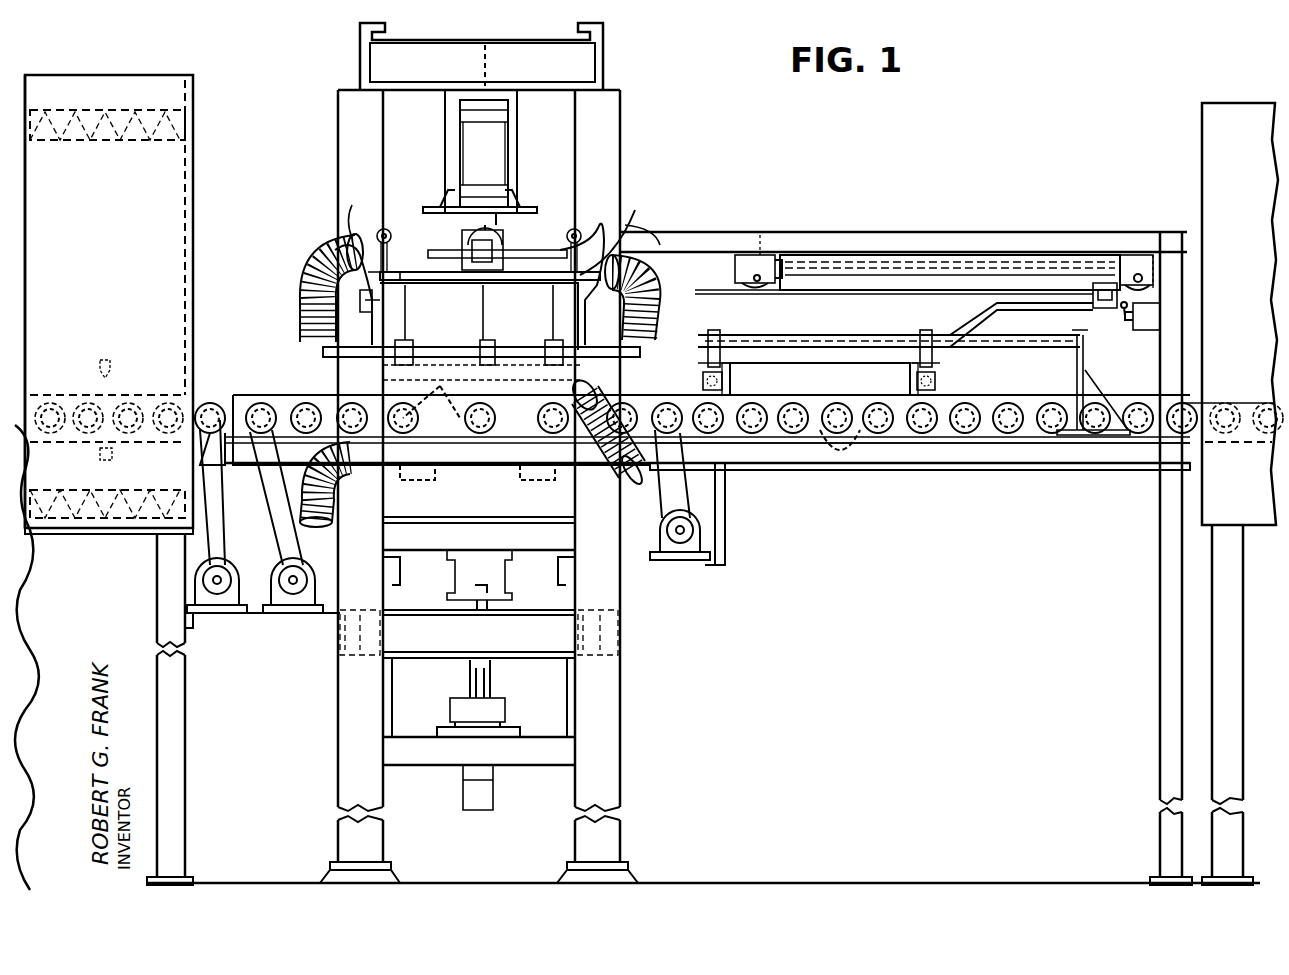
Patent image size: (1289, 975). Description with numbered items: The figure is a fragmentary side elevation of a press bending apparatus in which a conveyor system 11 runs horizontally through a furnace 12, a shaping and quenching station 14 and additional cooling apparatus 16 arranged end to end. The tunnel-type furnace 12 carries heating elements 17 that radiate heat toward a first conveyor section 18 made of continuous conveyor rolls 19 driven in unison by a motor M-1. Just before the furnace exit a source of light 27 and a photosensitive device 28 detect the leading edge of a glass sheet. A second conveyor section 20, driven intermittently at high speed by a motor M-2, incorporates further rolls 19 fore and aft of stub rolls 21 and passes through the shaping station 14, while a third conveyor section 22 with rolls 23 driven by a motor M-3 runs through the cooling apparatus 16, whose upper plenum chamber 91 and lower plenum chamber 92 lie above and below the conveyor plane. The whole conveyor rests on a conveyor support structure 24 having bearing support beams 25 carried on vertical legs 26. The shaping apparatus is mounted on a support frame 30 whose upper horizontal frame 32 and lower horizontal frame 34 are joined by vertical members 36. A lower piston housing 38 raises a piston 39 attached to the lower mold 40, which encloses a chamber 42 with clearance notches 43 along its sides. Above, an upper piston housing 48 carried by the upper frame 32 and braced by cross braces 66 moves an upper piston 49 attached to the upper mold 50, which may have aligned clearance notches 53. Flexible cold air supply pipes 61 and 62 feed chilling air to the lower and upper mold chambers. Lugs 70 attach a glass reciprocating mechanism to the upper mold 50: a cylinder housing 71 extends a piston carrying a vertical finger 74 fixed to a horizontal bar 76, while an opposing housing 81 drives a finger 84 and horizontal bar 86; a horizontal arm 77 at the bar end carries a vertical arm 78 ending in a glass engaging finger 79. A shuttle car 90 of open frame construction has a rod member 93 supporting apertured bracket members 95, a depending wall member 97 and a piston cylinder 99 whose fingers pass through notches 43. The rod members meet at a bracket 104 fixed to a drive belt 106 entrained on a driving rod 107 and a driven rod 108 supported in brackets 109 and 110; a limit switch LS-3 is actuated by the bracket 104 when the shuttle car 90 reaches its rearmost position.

The conveyor system 11 is at (62, 400).
The furnace 12 is at (45, 534).
The shaping and quenching station 14 is at (485, 486).
The additional cooling apparatus 16 is at (1232, 494).
The heating elements 17 is at (70, 142).
The first conveyor section 18 is at (125, 398).
The continuous conveyor rolls 19 is at (87, 402).
The second conveyor section 20 is at (283, 385).
The stub rolls 21 is at (431, 393).
The third conveyor section 22 is at (995, 390).
The rolls 23 is at (840, 437).
The conveyor support structure 24 is at (1117, 470).
The bearing support beams 25 is at (1008, 463).
The vertical legs 26 is at (1160, 672).
The source of light 27 is at (104, 358).
The photosensitive device 28 is at (112, 458).
The support frame 30 is at (565, 772).
The upper horizontal frame 32 is at (542, 92).
The lower horizontal frame 34 is at (535, 660).
The vertical members 36 is at (338, 735).
The lower piston housing 38 is at (455, 697).
The piston 39 is at (473, 606).
The lower mold 40 is at (530, 520).
The chamber 42 is at (478, 505).
The clearance notches 43 is at (435, 468).
The upper piston housing 48 is at (498, 160).
The upper piston 49 is at (482, 65).
The upper mold 50 is at (372, 300).
The clearance notches 53 is at (490, 358).
The flexible cold air supply pipes 61 is at (318, 528).
The flexible cold air supply pipes 62 is at (312, 255).
The cross braces 66 is at (525, 208).
The lugs 70 is at (440, 262).
The cylinder housing 71 is at (396, 228).
The vertical finger 74 is at (392, 252).
The horizontal bar 76 is at (358, 240).
The horizontal arm 77 is at (535, 280).
The vertical arm 78 is at (450, 323).
The glass engaging finger 79 is at (486, 355).
The housing 81 is at (575, 240).
The finger 84 is at (602, 238).
The horizontal bar 86 is at (630, 240).
The shuttle car 90 is at (775, 390).
The upper plenum chamber 91 is at (1252, 268).
The lower plenum chamber 92 is at (1252, 505).
The rod member 93 is at (845, 335).
The apertured bracket members 95 is at (713, 332).
The wall member 97 is at (726, 376).
The piston cylinder 99 is at (702, 380).
The bracket 104 is at (1105, 310).
The drive belt 106 is at (830, 292).
The driving rod 107 is at (1135, 275).
The driven rod 108 is at (757, 275).
The bracket 109 is at (1160, 265).
The bracket 110 is at (740, 265).
The motor M-1 is at (215, 612).
The motor M-2 is at (290, 612).
The motor M-3 is at (705, 580).
The limit switch LS-3 is at (1147, 333).